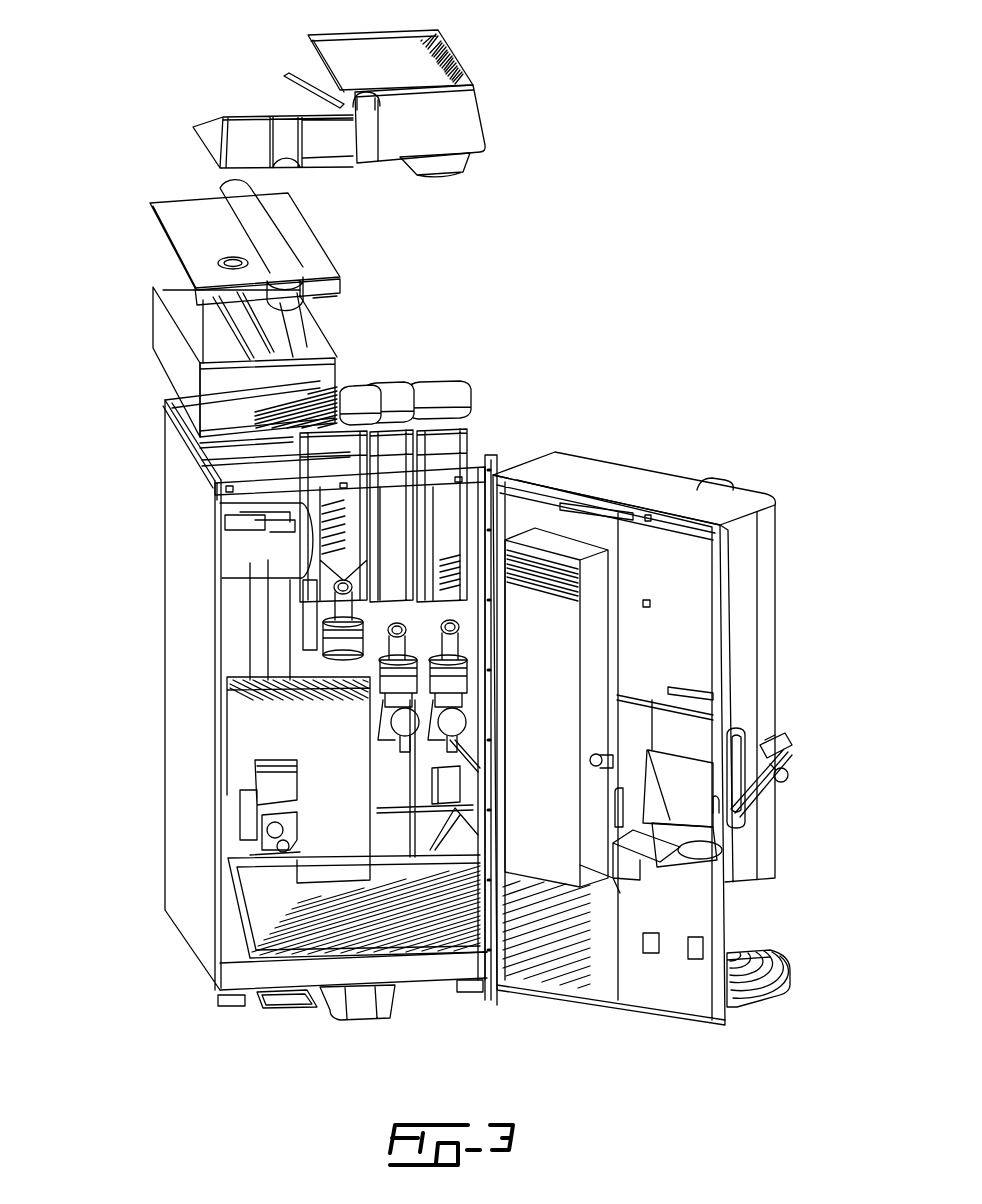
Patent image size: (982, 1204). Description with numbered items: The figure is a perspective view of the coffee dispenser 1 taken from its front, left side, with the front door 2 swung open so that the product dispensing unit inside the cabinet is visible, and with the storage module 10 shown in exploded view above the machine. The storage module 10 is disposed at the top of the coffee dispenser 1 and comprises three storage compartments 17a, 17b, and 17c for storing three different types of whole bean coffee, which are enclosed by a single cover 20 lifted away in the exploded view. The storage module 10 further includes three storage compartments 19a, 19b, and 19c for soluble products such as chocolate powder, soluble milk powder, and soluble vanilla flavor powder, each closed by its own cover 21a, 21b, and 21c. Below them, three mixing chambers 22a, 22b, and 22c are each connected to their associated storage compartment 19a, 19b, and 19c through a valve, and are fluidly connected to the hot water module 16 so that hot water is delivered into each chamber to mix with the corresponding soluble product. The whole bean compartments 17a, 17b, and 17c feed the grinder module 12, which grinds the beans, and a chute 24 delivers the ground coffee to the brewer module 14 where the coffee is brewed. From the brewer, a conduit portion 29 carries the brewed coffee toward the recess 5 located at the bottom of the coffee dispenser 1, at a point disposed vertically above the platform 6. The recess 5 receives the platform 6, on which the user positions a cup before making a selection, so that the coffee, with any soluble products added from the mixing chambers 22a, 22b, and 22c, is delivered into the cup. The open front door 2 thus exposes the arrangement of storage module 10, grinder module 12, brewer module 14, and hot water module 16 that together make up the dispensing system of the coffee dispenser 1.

The coffee dispenser 1 is at (662, 618).
The front door 2 is at (666, 706).
The recess 5 is at (780, 956).
The platform 6 is at (738, 948).
The storage module 10 is at (382, 170).
The grinder module 12 is at (228, 522).
The brewer module 14 is at (185, 775).
The hot water module 16 is at (373, 488).
The storage compartment 17a is at (240, 323).
The storage compartment 17b is at (280, 325).
The storage compartment 17c is at (193, 320).
The storage compartment 19a is at (350, 445).
The storage compartment 19b is at (403, 440).
The storage compartment 19c is at (447, 440).
The cover 20 is at (217, 250).
The cover 21a is at (345, 400).
The cover 21b is at (385, 392).
The cover 21c is at (433, 392).
The mixing chamber 22a is at (338, 628).
The mixing chamber 22b is at (383, 670).
The mixing chamber 22c is at (368, 648).
The chute 24 is at (252, 627).
The conduit portion 29 is at (250, 850).